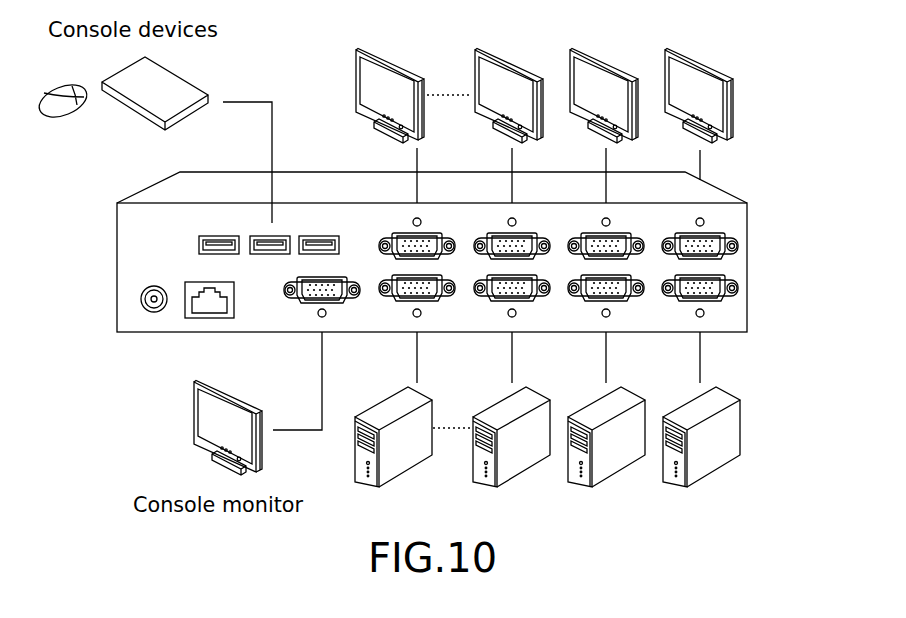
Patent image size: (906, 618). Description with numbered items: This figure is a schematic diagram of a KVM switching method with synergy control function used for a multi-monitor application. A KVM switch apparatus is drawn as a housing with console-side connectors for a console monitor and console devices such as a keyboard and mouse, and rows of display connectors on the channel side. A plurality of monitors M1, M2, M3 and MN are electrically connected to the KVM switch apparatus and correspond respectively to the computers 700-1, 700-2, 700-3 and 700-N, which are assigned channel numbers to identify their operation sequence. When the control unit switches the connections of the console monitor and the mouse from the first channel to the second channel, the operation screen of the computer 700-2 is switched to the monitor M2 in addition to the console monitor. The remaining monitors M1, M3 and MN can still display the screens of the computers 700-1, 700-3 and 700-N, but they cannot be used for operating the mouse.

The monitor MN is at (427, 110).
The monitor M3 is at (546, 110).
The monitor M2 is at (641, 110).
The monitor M1 is at (736, 110).
The computer 700-N is at (432, 406).
The computer 700-3 is at (550, 406).
The computer 700-2 is at (645, 406).
The computer 700-1 is at (740, 406).